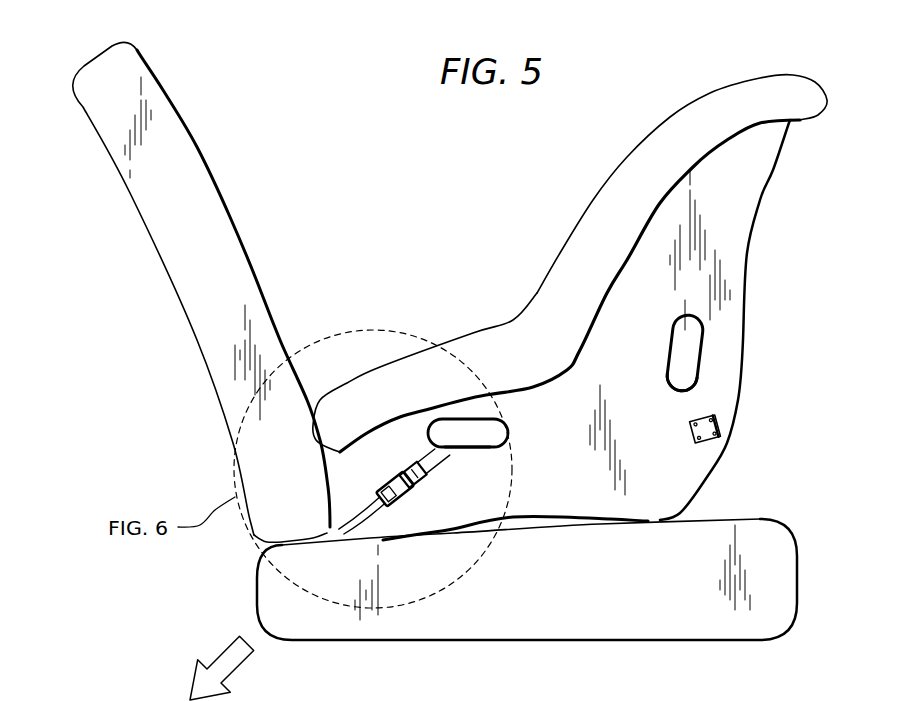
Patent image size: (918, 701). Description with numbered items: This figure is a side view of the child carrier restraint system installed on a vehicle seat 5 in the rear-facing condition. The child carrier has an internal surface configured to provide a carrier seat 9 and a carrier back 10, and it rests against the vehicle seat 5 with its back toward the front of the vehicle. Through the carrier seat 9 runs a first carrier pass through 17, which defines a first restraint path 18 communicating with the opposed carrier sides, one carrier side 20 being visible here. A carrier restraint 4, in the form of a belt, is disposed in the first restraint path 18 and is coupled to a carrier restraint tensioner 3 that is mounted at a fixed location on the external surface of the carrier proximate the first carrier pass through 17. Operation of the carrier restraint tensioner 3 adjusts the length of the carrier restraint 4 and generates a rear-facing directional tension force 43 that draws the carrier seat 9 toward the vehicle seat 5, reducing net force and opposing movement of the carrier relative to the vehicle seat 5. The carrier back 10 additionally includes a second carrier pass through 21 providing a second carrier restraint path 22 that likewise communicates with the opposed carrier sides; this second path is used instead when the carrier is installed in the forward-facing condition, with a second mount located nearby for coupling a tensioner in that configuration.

The carrier restraint tensioner 3 is at (410, 517).
The carrier restraint 4 is at (405, 470).
The vehicle seat 5 is at (123, 116).
The carrier seat 9 is at (507, 463).
The carrier back 10 is at (763, 197).
The first carrier pass through 17 is at (483, 450).
The first restraint path 18 is at (460, 437).
The carrier side 20 is at (617, 397).
The second carrier pass through 21 is at (707, 367).
The second carrier restraint path 22 is at (687, 340).
The rear-facing directional tension force 43 is at (222, 668).